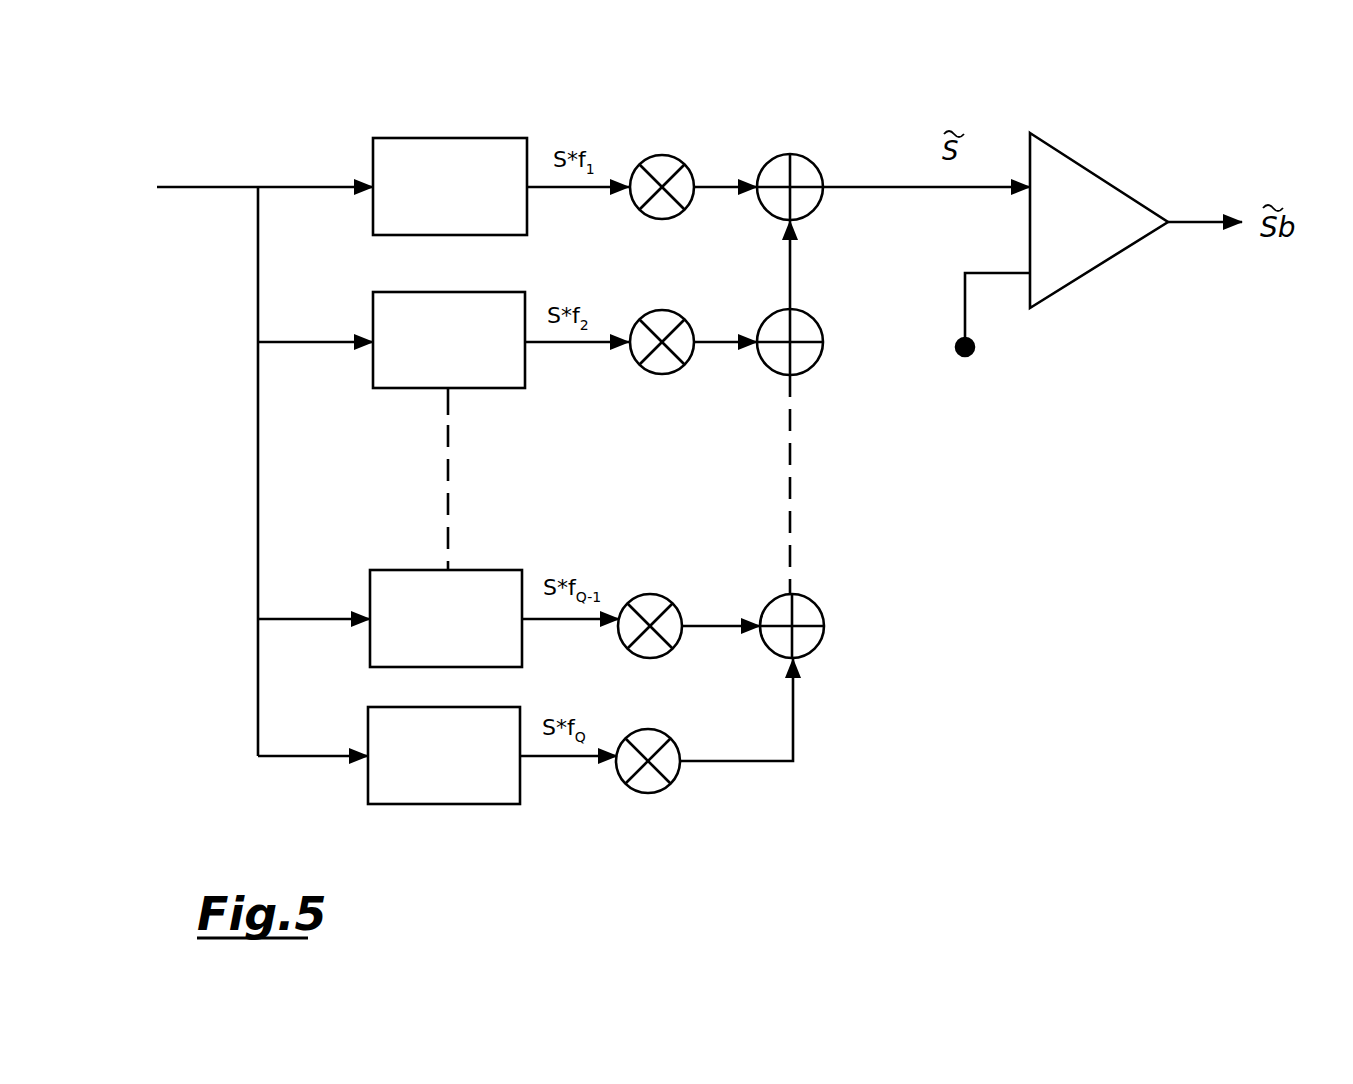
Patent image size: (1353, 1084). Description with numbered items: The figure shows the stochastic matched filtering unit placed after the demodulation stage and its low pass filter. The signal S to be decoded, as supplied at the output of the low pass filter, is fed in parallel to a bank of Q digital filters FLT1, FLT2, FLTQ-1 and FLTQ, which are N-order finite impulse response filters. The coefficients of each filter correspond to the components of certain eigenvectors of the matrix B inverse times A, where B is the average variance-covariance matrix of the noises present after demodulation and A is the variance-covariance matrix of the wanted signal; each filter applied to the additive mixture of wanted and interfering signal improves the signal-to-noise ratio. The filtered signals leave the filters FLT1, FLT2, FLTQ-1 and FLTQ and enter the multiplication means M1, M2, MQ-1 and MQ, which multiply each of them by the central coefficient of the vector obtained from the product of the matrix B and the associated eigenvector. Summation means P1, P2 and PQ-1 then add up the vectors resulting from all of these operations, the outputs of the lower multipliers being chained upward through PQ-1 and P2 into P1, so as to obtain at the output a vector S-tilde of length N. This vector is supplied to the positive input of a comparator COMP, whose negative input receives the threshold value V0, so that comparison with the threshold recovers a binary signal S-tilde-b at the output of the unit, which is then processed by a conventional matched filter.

The signal S is at (245, 464).
The first digital filter FLT1 is at (450, 138).
The second digital filter FLT2 is at (450, 292).
The (Q-1)th digital filter FLTQ-1 is at (448, 570).
The Qth digital filter FLTQ is at (445, 707).
The first multiplication means M1 is at (664, 221).
The second multiplication means M2 is at (660, 376).
The (Q-1)th multiplication means MQ-1 is at (700, 630).
The Qth multiplication means MQ is at (655, 795).
The first summation means P1 is at (797, 153).
The second summation means P2 is at (812, 314).
The (Q-1)th summation means PQ-1 is at (818, 596).
The comparator COMP is at (1100, 174).
The threshold value V0 is at (993, 343).